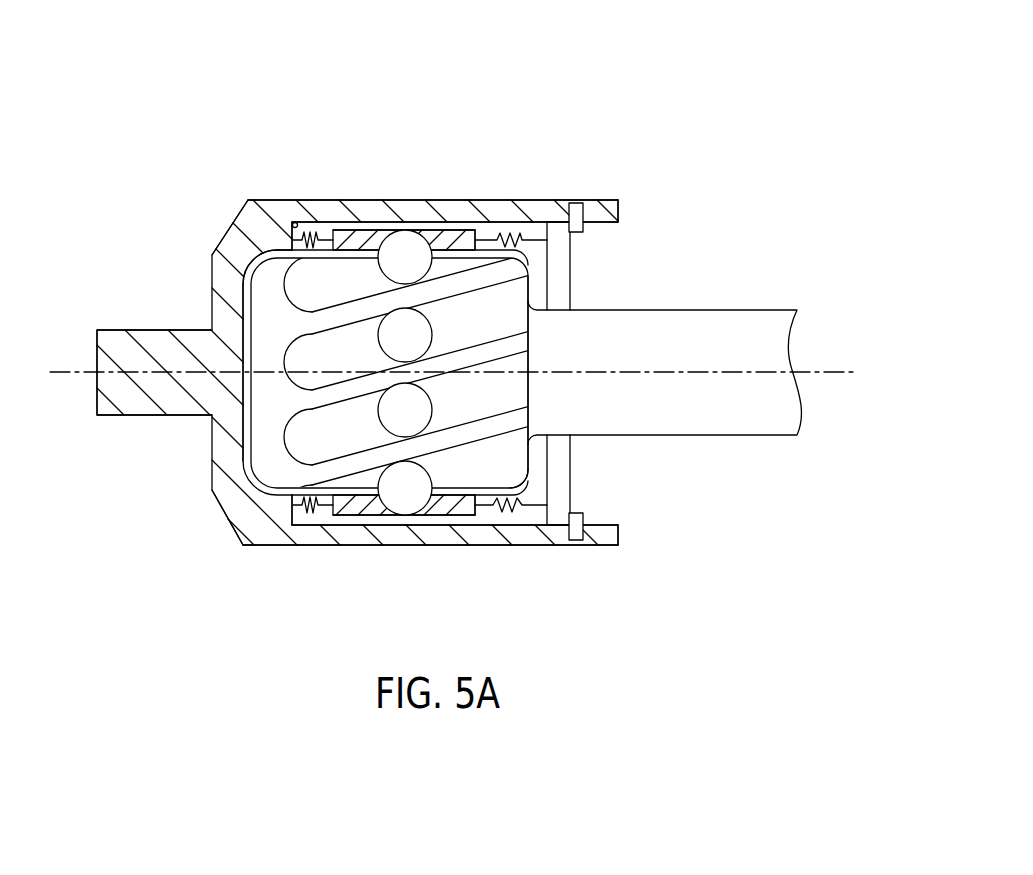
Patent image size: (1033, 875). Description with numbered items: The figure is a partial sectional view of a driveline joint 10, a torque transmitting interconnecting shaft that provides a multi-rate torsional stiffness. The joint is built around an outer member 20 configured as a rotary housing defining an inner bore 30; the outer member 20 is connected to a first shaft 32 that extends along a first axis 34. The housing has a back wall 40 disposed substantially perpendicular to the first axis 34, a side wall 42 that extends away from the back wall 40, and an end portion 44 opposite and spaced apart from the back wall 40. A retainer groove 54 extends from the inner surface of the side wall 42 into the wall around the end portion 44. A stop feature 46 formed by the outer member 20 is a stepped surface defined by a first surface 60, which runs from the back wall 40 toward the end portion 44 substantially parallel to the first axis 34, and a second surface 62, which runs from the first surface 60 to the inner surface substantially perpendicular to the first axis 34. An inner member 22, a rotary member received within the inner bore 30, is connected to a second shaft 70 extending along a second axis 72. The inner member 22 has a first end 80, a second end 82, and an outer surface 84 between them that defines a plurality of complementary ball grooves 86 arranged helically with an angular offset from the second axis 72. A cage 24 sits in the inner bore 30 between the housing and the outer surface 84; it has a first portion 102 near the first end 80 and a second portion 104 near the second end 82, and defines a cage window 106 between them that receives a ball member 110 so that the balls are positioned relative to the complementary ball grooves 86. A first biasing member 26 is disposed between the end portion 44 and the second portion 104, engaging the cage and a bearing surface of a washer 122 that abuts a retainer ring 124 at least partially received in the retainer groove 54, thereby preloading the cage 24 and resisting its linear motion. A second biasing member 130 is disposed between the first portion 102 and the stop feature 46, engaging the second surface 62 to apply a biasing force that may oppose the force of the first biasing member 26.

The driveline joint 10 is at (584, 88).
The outer member 20 is at (243, 214).
The inner member 22 is at (243, 470).
The cage 24 is at (344, 240).
The first biasing member 26 is at (507, 237).
The inner bore 30 is at (486, 228).
The first shaft 32 is at (130, 343).
The first axis 34 is at (64, 375).
The back wall 40 is at (230, 254).
The side wall 42 is at (314, 208).
The end portion 44 is at (619, 206).
The stop feature 46 is at (280, 222).
The retainer groove 54 is at (574, 220).
The first surface 60 is at (250, 230).
The second surface 62 is at (292, 224).
The second shaft 70 is at (696, 328).
The second axis 72 is at (838, 378).
The first end 80 is at (268, 452).
The second end 82 is at (530, 473).
The outer surface 84 is at (507, 457).
The complementary ball grooves 86 is at (438, 334).
The first portion 102 is at (348, 232).
The second portion 104 is at (470, 247).
The cage window 106 is at (385, 229).
The ball member 110 is at (409, 240).
The washer 122 is at (562, 272).
The retainer ring 124 is at (581, 208).
The second biasing member 130 is at (312, 236).